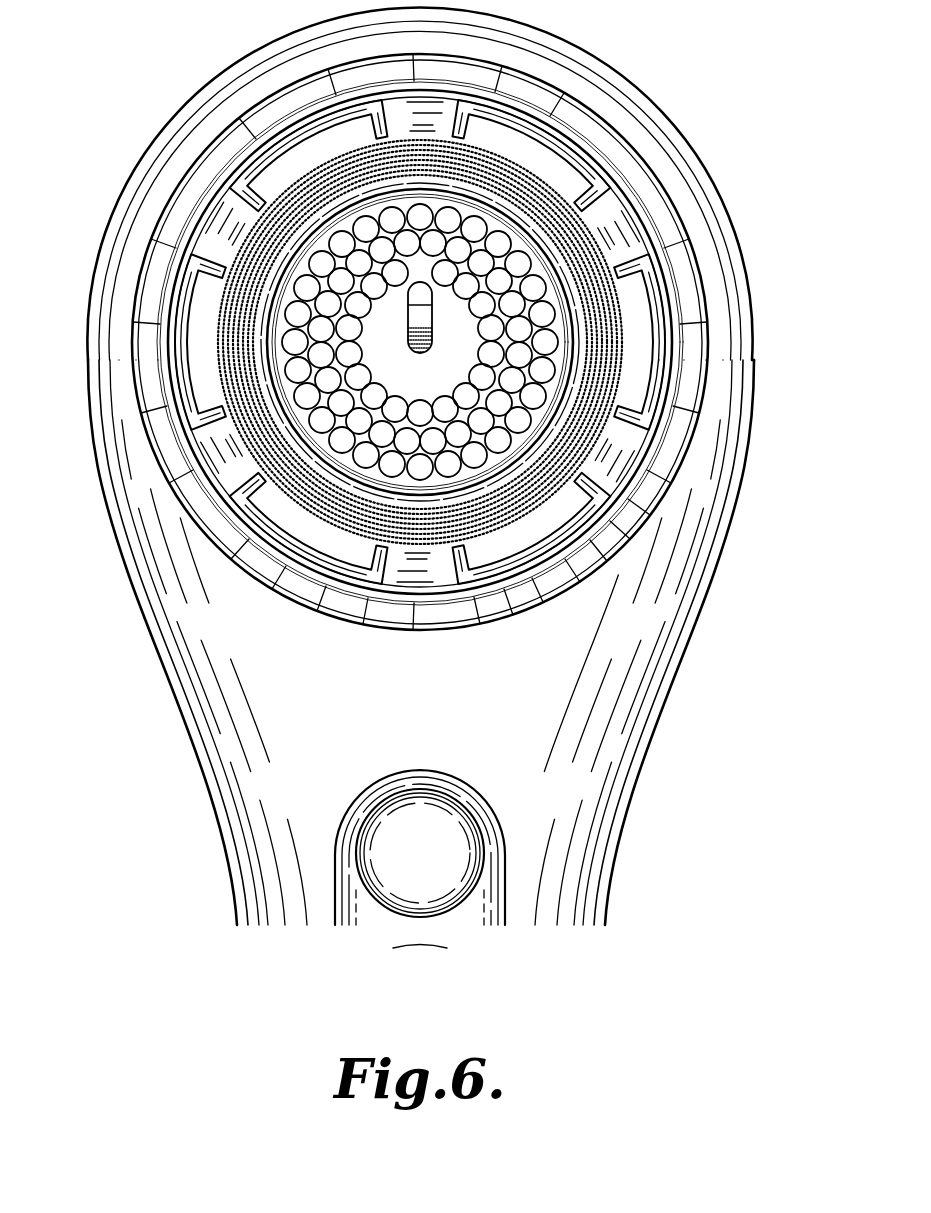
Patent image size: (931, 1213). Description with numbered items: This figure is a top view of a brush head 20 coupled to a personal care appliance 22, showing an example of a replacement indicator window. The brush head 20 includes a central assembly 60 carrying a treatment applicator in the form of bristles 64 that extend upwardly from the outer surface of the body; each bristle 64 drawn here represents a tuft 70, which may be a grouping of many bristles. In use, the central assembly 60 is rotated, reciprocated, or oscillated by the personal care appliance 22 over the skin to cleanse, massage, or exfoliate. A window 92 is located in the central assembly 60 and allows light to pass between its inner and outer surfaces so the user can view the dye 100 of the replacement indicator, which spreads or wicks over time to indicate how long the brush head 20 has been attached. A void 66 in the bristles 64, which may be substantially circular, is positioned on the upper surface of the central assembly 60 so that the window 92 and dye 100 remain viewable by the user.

The brush head 20 is at (183, 313).
The personal care appliance 22 is at (760, 358).
The central assembly 60 is at (497, 212).
The bristles 64 is at (363, 223).
The void 66 is at (473, 333).
The tufts 70 is at (566, 192).
The window 92 is at (416, 316).
The dye 100 is at (431, 350).